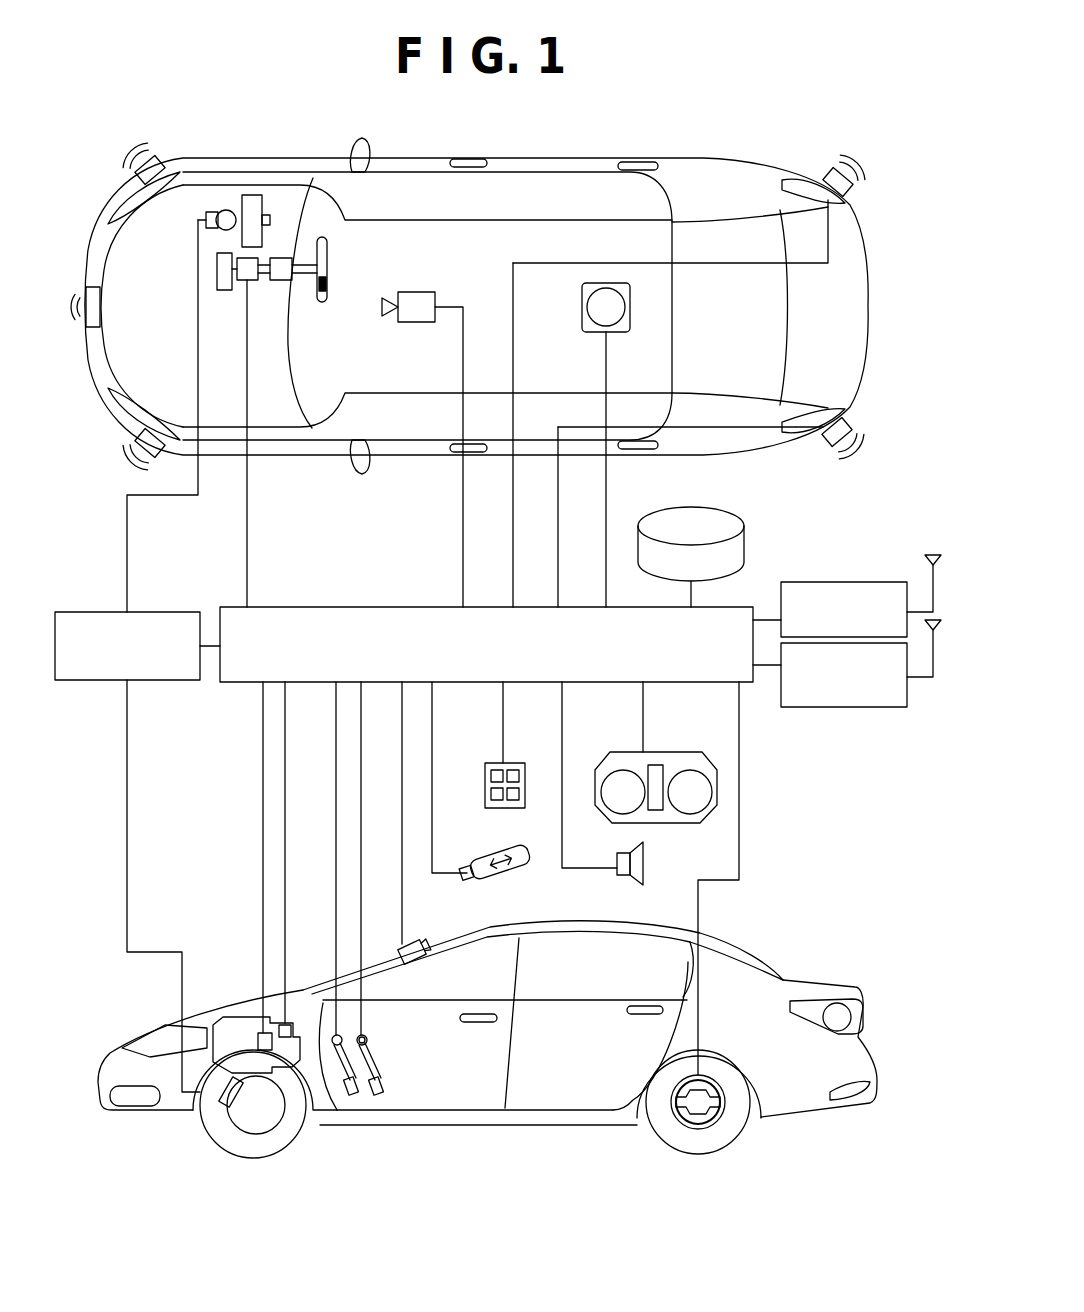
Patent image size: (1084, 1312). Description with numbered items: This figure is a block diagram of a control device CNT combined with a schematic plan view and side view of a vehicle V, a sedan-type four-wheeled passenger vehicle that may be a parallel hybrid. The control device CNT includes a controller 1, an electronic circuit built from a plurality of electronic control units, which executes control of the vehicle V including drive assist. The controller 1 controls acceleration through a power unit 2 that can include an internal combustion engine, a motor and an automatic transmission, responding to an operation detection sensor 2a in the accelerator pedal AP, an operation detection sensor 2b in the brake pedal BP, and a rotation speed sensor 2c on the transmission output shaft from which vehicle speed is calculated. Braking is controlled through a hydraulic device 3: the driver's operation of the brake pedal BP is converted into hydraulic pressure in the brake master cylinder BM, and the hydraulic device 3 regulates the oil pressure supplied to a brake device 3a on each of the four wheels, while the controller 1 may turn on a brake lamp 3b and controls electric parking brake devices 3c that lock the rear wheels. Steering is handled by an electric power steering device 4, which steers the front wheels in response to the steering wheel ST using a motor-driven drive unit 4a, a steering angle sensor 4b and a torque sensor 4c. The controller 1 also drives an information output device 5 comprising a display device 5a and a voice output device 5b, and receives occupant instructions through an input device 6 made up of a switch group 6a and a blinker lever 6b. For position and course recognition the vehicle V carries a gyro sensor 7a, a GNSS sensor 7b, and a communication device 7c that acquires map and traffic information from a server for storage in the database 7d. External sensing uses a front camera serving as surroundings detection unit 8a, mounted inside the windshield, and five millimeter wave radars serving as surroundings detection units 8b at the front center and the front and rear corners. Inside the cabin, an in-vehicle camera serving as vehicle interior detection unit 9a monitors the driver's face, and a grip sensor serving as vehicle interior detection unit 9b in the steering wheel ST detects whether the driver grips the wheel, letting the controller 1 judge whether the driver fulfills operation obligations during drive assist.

The vehicle V is at (887, 212).
The controller 1 is at (420, 607).
The power unit 2 is at (297, 1128).
The operation detection sensor 2a is at (337, 1030).
The operation detection sensor 2b is at (372, 1040).
The rotation speed sensor 2c is at (262, 1030).
The hydraulic device 3 is at (97, 612).
The brake device 3a is at (228, 1112).
The brake lamp 3b is at (840, 1004).
The electric parking brake device 3c is at (688, 1125).
The electric power steering device 4 is at (242, 249).
The drive unit 4a is at (257, 282).
The steering angle sensor 4b is at (217, 258).
The torque sensor 4c is at (281, 256).
The information output device 5 is at (643, 783).
The display device 5a is at (608, 772).
The voice output device 5b is at (615, 868).
The input device 6 is at (492, 783).
The switch group 6a is at (485, 775).
The blinker lever 6b is at (483, 862).
The gyro sensor 7a is at (597, 332).
The GNSS sensor 7b is at (832, 582).
The communication device 7c is at (855, 708).
The database 7d is at (745, 537).
The surroundings detection unit 8a is at (417, 292).
The surroundings detection unit 8b is at (168, 162).
The vehicle interior detection unit 9a is at (412, 942).
The vehicle interior detection unit 9b is at (330, 283).
The accelerator pedal AP is at (362, 1090).
The brake pedal BP is at (390, 1090).
The brake master cylinder BM is at (232, 208).
The steering wheel ST is at (328, 245).
The control device CNT is at (789, 609).